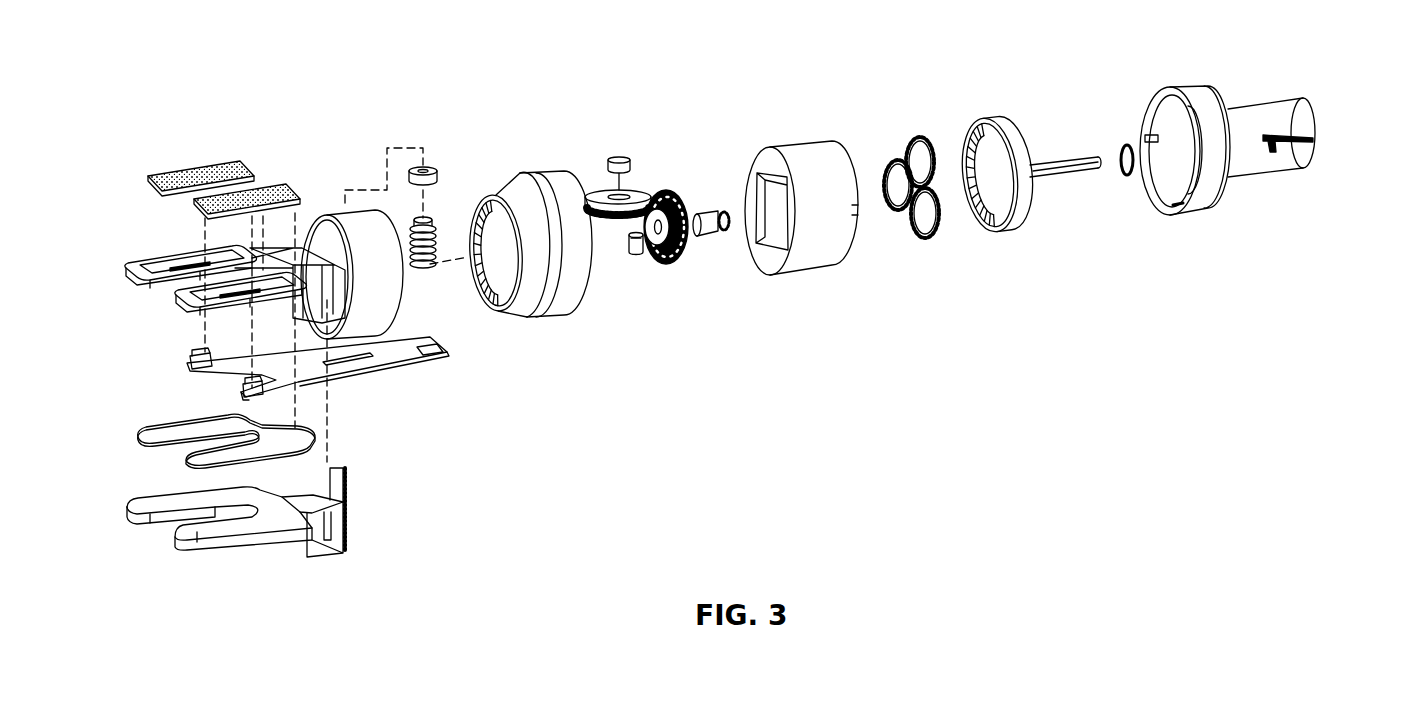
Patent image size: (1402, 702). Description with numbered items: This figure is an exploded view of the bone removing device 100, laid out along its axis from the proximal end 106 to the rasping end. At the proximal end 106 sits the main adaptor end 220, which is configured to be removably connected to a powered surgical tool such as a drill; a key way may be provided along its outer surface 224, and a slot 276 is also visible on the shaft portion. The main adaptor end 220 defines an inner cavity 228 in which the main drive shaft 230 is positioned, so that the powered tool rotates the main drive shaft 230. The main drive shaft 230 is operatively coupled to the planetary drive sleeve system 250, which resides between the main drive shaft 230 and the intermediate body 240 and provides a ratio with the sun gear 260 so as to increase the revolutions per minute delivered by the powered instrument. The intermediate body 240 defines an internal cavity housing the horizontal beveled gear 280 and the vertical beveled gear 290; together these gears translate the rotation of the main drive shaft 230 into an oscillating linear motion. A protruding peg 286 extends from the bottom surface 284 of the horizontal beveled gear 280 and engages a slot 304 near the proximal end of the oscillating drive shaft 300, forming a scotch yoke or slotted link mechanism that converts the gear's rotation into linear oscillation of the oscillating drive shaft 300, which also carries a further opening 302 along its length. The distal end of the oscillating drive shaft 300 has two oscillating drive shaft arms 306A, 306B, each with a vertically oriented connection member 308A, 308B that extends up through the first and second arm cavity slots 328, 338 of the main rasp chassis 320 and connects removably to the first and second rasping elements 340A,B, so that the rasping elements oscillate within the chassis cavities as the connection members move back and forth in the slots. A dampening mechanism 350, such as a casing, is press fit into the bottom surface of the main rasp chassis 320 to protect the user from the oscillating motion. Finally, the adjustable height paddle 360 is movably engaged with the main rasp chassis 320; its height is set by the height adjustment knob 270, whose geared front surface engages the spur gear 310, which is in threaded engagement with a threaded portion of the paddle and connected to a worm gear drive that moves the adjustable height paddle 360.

The bone removing device 100 is at (949, 72).
The proximal end 106 is at (1318, 82).
The main adaptor end 220 is at (1200, 218).
The outer surface 224 is at (1272, 105).
The inner cavity 228 is at (1163, 111).
The main drive shaft 230 is at (1008, 240).
The intermediate body 240 is at (782, 140).
The planetary drive sleeve system 250 is at (900, 152).
The sun gear 260 is at (722, 238).
The height adjustment knob 270 is at (563, 311).
The shaft slot 276 is at (1318, 138).
The horizontal beveled gear 280 is at (640, 182).
The bottom surface 284 is at (613, 222).
The protruding peg 286 is at (636, 256).
The vertical beveled gear 290 is at (668, 271).
The oscillating drive shaft 300 is at (406, 366).
The plate slot 302 is at (351, 370).
The slot 304 is at (447, 352).
The first oscillating drive shaft arm 306A is at (190, 372).
The second oscillating drive shaft arm 306B is at (243, 393).
The first vertically oriented connection member 308A is at (197, 354).
The second vertically oriented connection member 308B is at (253, 387).
The spur gear 310 is at (429, 163).
The main rasp chassis 320 is at (359, 203).
The first arm cavity slot 328 is at (184, 263).
The second arm cavity slot 338 is at (250, 298).
The first and second rasping elements 340A,B is at (215, 155).
The dampening mechanism 350 is at (338, 437).
The adjustable height paddle 360 is at (275, 549).